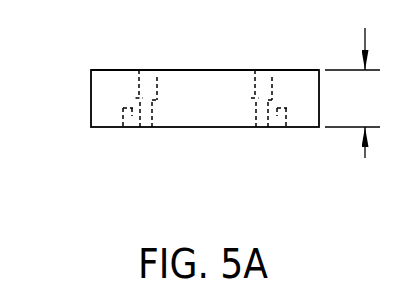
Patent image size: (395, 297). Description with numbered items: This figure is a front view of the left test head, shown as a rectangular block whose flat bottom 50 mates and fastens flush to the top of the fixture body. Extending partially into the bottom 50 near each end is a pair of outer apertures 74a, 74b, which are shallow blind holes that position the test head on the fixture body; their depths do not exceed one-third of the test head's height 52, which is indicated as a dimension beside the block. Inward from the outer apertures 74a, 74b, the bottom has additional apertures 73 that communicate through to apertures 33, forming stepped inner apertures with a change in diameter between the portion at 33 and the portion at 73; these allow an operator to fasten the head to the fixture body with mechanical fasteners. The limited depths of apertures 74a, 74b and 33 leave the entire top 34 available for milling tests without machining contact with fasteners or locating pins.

The aperture 33 is at (260, 69).
The top 34 is at (302, 70).
The bottom 50 is at (108, 128).
The test head height 52 is at (352, 93).
The aperture 73 is at (257, 128).
The outer aperture 74a is at (130, 128).
The outer aperture 74b is at (280, 128).